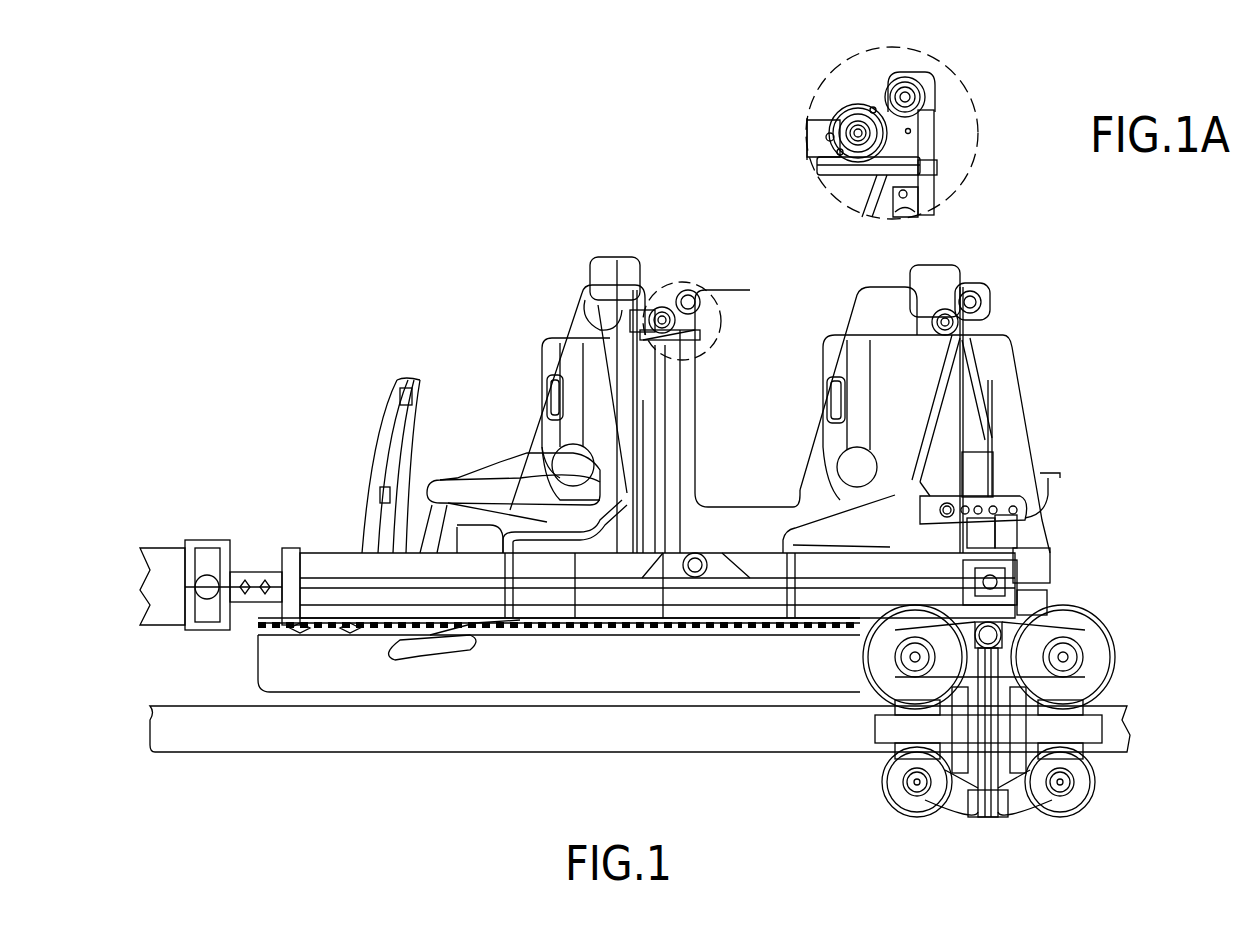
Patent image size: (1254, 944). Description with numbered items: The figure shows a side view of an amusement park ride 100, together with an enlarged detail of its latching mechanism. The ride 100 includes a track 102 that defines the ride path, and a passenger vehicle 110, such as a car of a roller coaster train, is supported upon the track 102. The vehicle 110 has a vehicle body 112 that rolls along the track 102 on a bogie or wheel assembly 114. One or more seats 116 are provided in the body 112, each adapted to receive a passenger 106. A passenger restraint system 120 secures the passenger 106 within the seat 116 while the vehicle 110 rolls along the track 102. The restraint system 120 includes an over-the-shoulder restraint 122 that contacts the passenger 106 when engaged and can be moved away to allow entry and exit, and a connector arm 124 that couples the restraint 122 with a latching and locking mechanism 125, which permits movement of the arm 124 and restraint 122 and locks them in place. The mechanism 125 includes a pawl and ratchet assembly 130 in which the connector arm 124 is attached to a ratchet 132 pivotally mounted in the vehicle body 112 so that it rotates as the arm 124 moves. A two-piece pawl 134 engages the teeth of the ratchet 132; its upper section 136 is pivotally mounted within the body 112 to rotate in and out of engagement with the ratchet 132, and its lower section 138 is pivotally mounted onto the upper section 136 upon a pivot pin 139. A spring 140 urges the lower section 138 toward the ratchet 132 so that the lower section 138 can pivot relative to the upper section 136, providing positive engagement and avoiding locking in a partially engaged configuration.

In FIG. 1, the amusement park ride 100 is at (222, 395).
In FIG. 1, the track 102 is at (340, 752).
In FIG. 1, the passenger 106 is at (600, 255).
In FIG. 1, the passenger vehicle 110 is at (1152, 819).
In FIG. 1, the vehicle body 112 is at (1062, 595).
In FIG. 1, the bogie or wheel assembly 114 is at (855, 778).
In FIG. 1, the seat 116 is at (655, 255).
In FIG. 1, the passenger restraint system 120 is at (555, 332).
In FIG. 1, the restraint 122 is at (545, 352).
In FIG. 1, the connector arm 124 is at (630, 300).
In FIG. 1, the latching and locking mechanism 125 is at (727, 380).
In FIG. 1, the pawl and ratchet assembly 130 is at (735, 316).
In FIG. 1A, the pawl and ratchet assembly 130 is at (925, 52).
In FIG. 1A, the ratchet 132 is at (840, 90).
In FIG. 1A, the pawl 134 is at (925, 148).
In FIG. 1A, the upper section 136 is at (925, 118).
In FIG. 1A, the lower section 138 is at (935, 190).
In FIG. 1A, the pivot pin 139 is at (925, 133).
In FIG. 1A, the spring 140 is at (945, 165).